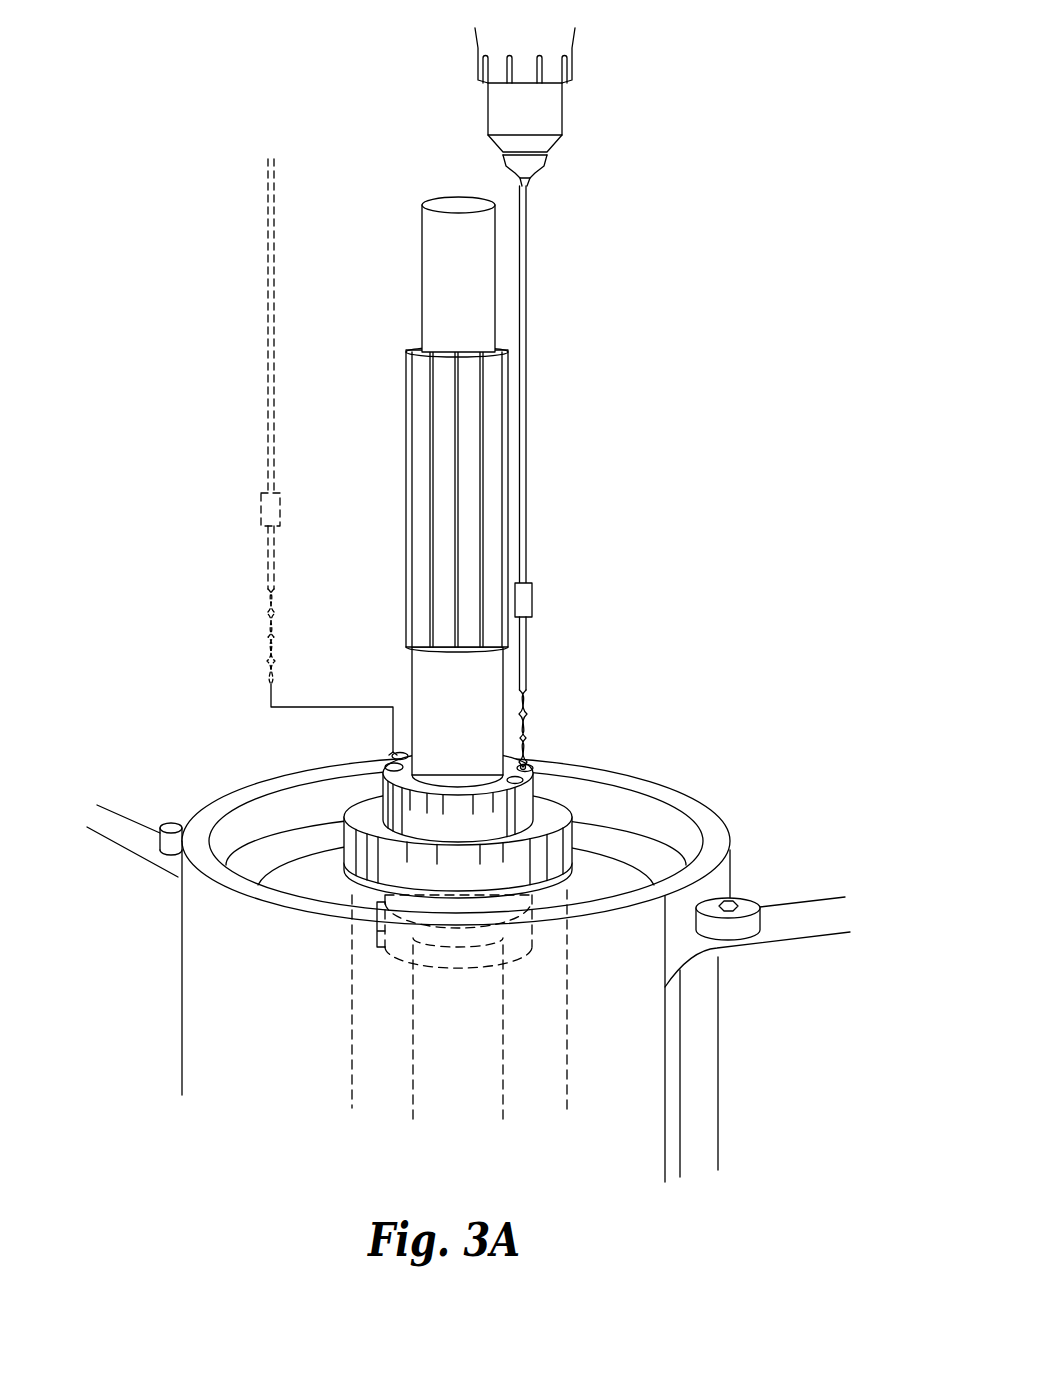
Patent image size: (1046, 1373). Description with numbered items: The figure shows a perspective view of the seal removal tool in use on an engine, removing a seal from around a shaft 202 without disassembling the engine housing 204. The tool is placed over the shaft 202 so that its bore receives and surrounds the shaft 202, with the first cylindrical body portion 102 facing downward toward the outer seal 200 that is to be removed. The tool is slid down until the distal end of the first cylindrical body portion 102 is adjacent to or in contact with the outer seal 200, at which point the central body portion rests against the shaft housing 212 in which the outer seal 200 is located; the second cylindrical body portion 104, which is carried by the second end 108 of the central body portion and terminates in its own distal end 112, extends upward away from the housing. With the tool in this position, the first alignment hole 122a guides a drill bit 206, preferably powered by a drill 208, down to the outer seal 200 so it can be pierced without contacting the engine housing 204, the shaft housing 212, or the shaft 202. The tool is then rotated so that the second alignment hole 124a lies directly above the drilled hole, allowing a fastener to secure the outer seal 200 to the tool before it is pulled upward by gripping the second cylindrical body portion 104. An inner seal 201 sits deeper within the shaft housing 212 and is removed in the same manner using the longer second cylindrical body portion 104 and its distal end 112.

The first cylindrical body portion 102 is at (385, 897).
The second cylindrical body portion 104 is at (552, 813).
The second end 108 is at (532, 787).
The distal end 112 is at (383, 780).
The alignment hole 122a is at (385, 752).
The alignment hole 124a is at (400, 752).
The outer seal 200 is at (375, 913).
The inner seal 201 is at (385, 931).
The shaft 202 is at (433, 280).
The engine housing 204 is at (730, 866).
The drill bit 206 is at (266, 547).
The drill 208 is at (563, 106).
The shaft housing 212 is at (573, 893).